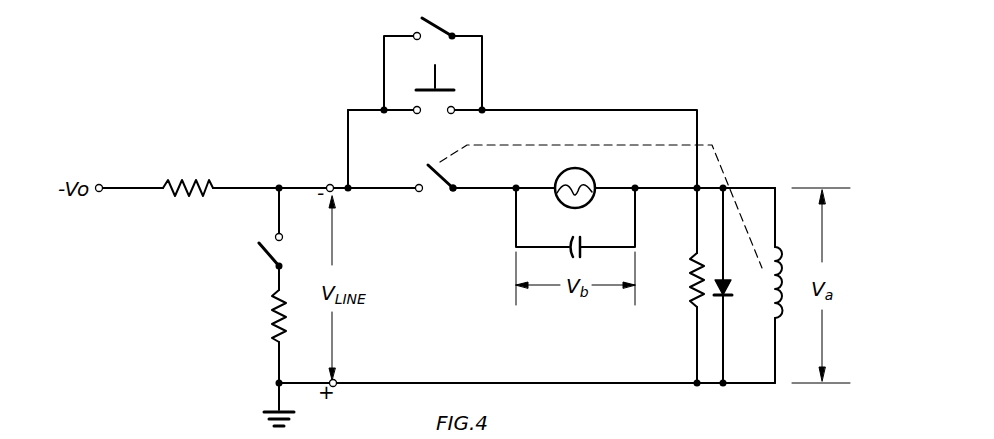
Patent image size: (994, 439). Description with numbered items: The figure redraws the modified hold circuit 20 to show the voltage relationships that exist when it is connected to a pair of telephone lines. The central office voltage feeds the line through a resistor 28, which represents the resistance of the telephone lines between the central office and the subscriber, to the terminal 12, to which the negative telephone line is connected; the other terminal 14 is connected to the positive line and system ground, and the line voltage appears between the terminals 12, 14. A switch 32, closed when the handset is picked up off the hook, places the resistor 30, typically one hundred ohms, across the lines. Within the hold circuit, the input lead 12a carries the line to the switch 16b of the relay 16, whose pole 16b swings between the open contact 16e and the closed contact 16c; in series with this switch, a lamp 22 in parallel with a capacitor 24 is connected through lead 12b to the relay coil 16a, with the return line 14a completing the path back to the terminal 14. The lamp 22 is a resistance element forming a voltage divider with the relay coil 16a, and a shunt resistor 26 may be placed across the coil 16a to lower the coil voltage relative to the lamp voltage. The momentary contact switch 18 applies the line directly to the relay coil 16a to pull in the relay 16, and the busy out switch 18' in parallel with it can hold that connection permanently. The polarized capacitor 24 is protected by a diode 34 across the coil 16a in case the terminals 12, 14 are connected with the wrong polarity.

The terminal 12 is at (326, 185).
The input terminal lead 12a is at (338, 184).
The output terminal lead 12b is at (760, 188).
The terminal 14 is at (337, 388).
The common return line 14a is at (608, 384).
The relay 16 is at (745, 134).
The relay coil 16a is at (780, 320).
The switch 16b is at (436, 200).
The switch contact 16c is at (447, 195).
The switch contact 16e is at (416, 196).
The momentary contact switch 18 is at (445, 82).
The busy out switch 18' is at (463, 23).
The circuit 20 is at (312, 110).
The lamp 22 is at (594, 177).
The capacitor 24 is at (582, 238).
The shunt resistor 26 is at (692, 287).
The resistor 28 is at (186, 183).
The resistor 30 is at (273, 322).
The switch 32 is at (265, 258).
The diode 34 is at (728, 300).